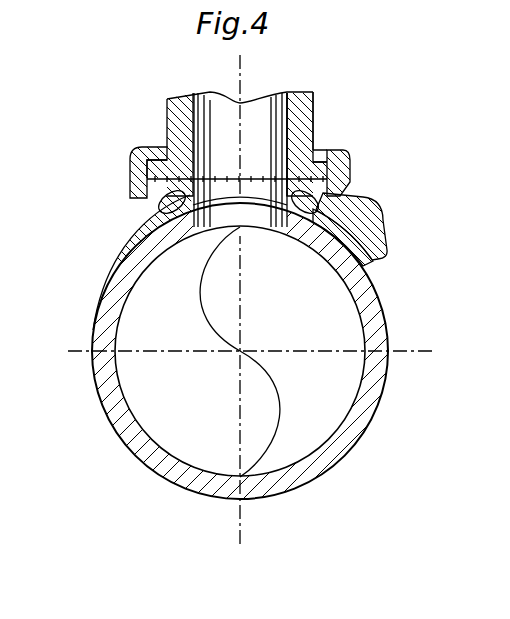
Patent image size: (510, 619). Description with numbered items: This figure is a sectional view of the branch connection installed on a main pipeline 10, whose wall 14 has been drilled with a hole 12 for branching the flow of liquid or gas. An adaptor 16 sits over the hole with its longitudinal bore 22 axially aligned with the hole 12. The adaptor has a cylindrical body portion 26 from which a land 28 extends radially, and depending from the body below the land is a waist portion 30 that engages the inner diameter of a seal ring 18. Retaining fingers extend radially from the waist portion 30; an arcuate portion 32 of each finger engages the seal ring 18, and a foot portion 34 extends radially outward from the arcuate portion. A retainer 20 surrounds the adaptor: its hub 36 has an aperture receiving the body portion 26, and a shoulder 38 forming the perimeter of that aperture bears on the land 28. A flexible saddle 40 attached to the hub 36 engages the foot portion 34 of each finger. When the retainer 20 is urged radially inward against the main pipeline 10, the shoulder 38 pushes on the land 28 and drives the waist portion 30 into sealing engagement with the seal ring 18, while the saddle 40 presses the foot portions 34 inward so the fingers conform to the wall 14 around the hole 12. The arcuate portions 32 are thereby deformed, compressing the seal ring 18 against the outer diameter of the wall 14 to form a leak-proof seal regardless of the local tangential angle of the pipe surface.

The main pipeline 10 is at (350, 457).
The hole 12 is at (258, 215).
The wall 14 is at (377, 308).
The adaptor 16 is at (158, 125).
The seal ring 18 is at (302, 178).
The retainer 20 is at (380, 251).
The longitudinal bore 22 is at (257, 120).
The cylindrical body portion 26 is at (198, 132).
The land 28 is at (137, 173).
The waist portion 30 is at (200, 230).
The arcuate portion 32 is at (150, 200).
The foot portion 34 is at (105, 242).
The hub 36 is at (355, 160).
The shoulder 38 is at (321, 152).
The flexible saddle 40 is at (367, 218).